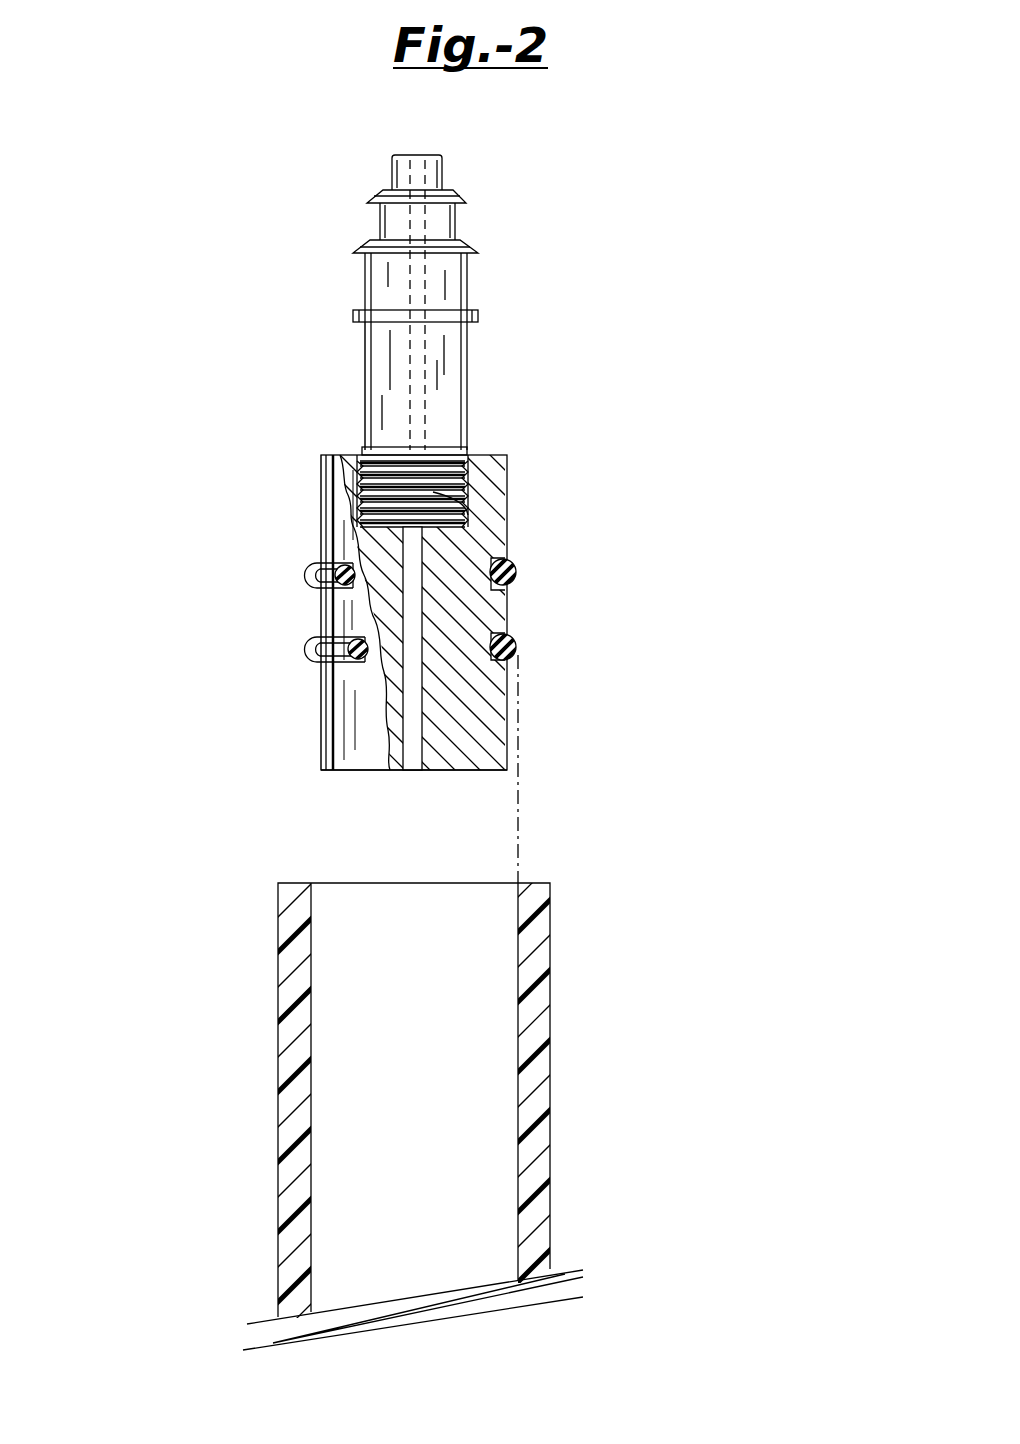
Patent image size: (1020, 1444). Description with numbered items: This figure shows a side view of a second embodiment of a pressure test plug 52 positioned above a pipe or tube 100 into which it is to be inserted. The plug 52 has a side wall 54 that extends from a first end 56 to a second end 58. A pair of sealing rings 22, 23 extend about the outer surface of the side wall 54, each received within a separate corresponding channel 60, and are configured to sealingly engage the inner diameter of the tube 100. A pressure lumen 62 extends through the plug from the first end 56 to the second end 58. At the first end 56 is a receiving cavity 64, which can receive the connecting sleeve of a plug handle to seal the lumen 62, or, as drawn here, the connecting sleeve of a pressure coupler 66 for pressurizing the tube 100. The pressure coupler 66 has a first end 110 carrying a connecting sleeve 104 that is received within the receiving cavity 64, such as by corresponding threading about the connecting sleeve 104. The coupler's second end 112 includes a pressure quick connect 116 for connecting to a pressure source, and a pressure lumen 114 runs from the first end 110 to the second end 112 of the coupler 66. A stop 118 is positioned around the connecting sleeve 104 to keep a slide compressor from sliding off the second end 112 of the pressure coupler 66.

The sealing ring 22 is at (516, 567).
The sealing ring 23 is at (503, 684).
The pressure test plug 52 is at (280, 627).
The side wall 54 is at (505, 613).
The first end 56 is at (330, 455).
The second end 58 is at (337, 772).
The channel 60 is at (505, 687).
The pressure lumen 62 is at (409, 772).
The receiving cavity 64 is at (450, 483).
The pressure coupler 66 is at (467, 281).
The pipe or tube 100 is at (568, 980).
The connecting sleeve 104 is at (467, 406).
The first end 110 is at (432, 155).
The second end 112 is at (441, 525).
The pressure lumen 114 is at (424, 153).
The pressure quick connect 116 is at (442, 168).
The stop 118 is at (467, 305).